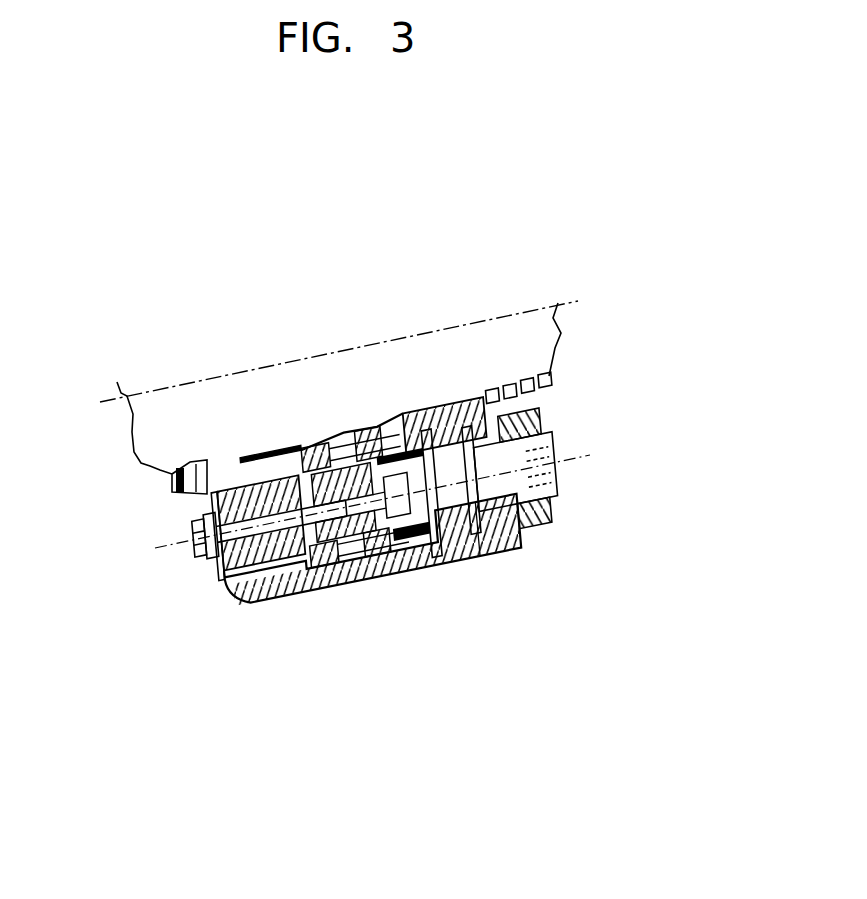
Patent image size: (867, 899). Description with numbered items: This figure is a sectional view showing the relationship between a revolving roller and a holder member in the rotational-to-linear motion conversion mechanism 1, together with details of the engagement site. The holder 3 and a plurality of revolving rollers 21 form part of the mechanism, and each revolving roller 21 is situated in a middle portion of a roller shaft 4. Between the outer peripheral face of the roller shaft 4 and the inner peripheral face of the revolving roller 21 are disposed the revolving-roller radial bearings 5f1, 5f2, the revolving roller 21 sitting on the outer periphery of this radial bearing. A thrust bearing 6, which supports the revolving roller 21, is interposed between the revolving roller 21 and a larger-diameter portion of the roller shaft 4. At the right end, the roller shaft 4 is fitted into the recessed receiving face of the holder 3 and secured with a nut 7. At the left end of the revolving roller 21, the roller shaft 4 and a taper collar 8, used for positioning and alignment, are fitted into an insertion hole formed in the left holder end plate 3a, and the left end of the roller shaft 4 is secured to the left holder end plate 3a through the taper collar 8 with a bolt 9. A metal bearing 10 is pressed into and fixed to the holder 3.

The rotational-to-linear motion conversion mechanism 1 is at (562, 333).
The holder 3 is at (510, 550).
The left holder end plate 3a is at (280, 603).
The roller shaft 4 is at (547, 433).
The revolving-roller radial bearing 5f1 is at (315, 427).
The revolving-roller radial bearing 5f2 is at (370, 427).
The thrust bearing 6 is at (443, 568).
The nut 7 is at (555, 513).
The taper collar 8 is at (223, 577).
The bolt 9 is at (193, 548).
The metal bearing 10 is at (243, 457).
The revolving roller 21 is at (355, 590).